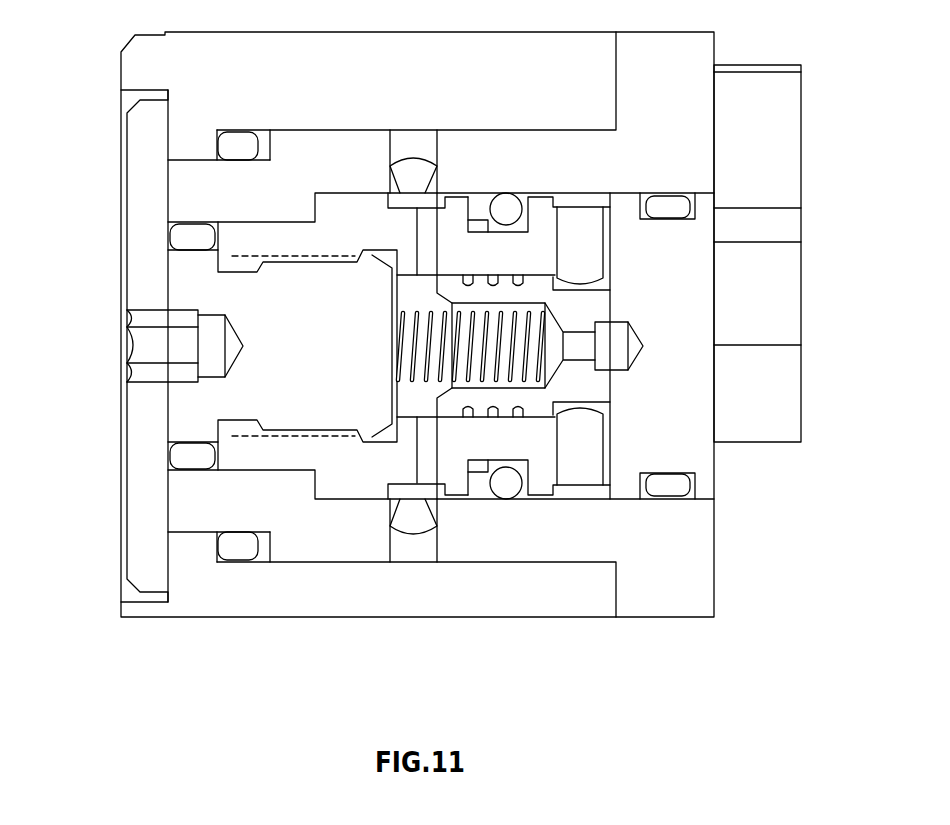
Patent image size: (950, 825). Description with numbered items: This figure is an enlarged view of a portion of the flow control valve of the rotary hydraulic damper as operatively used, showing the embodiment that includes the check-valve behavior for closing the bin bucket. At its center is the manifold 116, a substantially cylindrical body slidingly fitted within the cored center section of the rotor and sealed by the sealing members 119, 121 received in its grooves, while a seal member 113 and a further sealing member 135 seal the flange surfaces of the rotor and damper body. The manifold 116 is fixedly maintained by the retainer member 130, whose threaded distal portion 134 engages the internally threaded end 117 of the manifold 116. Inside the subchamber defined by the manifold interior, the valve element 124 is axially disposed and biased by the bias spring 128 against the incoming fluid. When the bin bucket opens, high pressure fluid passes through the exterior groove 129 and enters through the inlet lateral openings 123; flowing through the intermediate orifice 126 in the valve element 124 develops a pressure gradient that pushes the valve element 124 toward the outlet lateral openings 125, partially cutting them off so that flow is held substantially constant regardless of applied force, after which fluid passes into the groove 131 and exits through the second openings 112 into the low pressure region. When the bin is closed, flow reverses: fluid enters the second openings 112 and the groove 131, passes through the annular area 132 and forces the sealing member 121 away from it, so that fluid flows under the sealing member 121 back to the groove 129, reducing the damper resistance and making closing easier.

The second openings 112 is at (403, 145).
The seal member 113 is at (237, 548).
The manifold 116 is at (687, 462).
The internally threaded end 117 is at (297, 457).
The sealing member 119 is at (667, 200).
The sealing member 121 is at (507, 492).
The lateral opening 123 is at (580, 228).
The valve element 124 is at (452, 403).
The lateral opening 125 is at (423, 238).
The intermediate orifice 126 is at (580, 352).
The bias spring 128 is at (415, 311).
The groove 129 is at (590, 202).
The retainer member 130 is at (143, 527).
The groove 131 is at (440, 202).
The annular area 132 is at (458, 193).
The distal threaded portion 134 is at (297, 293).
The sealing member 135 is at (173, 455).